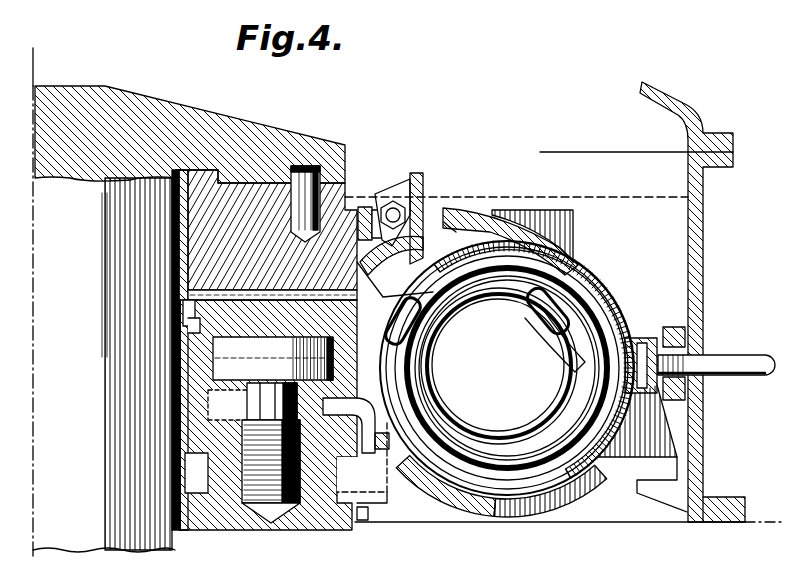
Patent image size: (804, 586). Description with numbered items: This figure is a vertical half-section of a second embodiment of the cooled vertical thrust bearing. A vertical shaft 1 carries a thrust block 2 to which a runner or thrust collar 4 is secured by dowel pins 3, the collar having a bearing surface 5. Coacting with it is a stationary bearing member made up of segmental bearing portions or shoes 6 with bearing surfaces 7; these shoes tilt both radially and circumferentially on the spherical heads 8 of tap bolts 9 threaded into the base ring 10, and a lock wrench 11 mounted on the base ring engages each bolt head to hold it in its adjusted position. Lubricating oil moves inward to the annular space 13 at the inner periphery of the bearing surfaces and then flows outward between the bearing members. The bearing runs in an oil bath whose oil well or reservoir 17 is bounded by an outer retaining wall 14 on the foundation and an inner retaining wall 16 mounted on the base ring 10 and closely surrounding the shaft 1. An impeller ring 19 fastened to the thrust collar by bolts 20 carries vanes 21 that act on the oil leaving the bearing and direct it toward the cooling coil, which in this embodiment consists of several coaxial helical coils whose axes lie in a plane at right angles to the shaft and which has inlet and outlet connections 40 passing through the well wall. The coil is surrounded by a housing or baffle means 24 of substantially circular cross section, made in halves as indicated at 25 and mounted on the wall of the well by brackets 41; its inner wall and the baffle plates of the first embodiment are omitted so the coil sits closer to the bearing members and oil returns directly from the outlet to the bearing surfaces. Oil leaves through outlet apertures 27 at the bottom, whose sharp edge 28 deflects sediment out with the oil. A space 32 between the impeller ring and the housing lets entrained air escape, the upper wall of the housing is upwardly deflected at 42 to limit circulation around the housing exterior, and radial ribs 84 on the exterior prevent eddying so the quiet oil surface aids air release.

The vertical shaft 1 is at (96, 522).
The thrust block 2 is at (130, 106).
The dowel pins 3 is at (306, 170).
The runner or thrust collar 4 is at (200, 226).
The bearing surface 5 is at (213, 290).
The segmental bearing portions or shoes 6 is at (217, 326).
The bearing surfaces 7 is at (168, 312).
The spherical heads 8 is at (270, 402).
The tap bolts 9 is at (250, 471).
The base ring 10 is at (216, 518).
The lock wrench 11 is at (337, 447).
The annular space 13 is at (490, 287).
The outer retaining wall 14 is at (705, 238).
The inner retaining wall 16 is at (176, 440).
The oil well or reservoir 17 is at (627, 230).
The impeller ring 19 is at (382, 240).
The bolts 20 is at (366, 206).
The vanes 21 is at (427, 222).
The housing or baffle means 24 is at (610, 293).
The housing halves 25 is at (645, 343).
The outlet apertures 27 is at (502, 498).
The sharp edge 28 is at (476, 494).
The space 32 is at (430, 224).
The inlet and outlet connections 40 is at (707, 353).
The brackets 41 is at (657, 453).
The upwardly deflected upper wall 42 is at (458, 230).
The radial ribs 84 is at (560, 217).